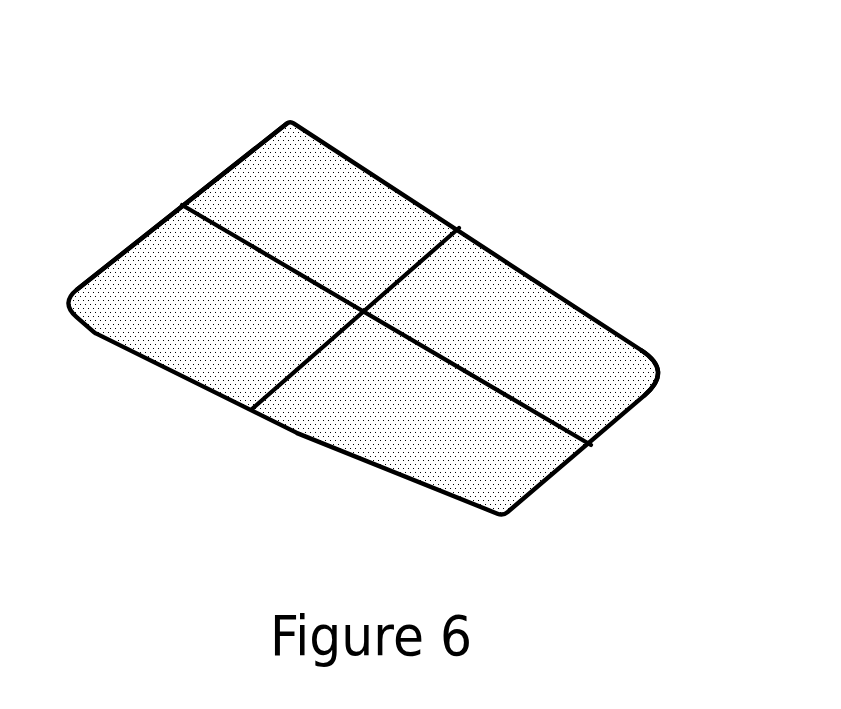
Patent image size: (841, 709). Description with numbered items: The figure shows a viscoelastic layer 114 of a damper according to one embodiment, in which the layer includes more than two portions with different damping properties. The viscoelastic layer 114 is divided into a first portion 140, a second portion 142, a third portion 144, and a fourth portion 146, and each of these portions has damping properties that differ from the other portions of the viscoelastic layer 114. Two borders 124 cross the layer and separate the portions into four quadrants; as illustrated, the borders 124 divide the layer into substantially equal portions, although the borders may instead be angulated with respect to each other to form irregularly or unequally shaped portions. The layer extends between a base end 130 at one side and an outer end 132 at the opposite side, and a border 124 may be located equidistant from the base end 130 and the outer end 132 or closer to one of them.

The viscoelastic layer 114 is at (243, 117).
The border 124 is at (447, 260).
The base end 130 is at (232, 166).
The outer end 132 is at (633, 413).
The first portion 140 is at (338, 183).
The second portion 142 is at (540, 317).
The third portion 144 is at (193, 335).
The fourth portion 146 is at (405, 433).